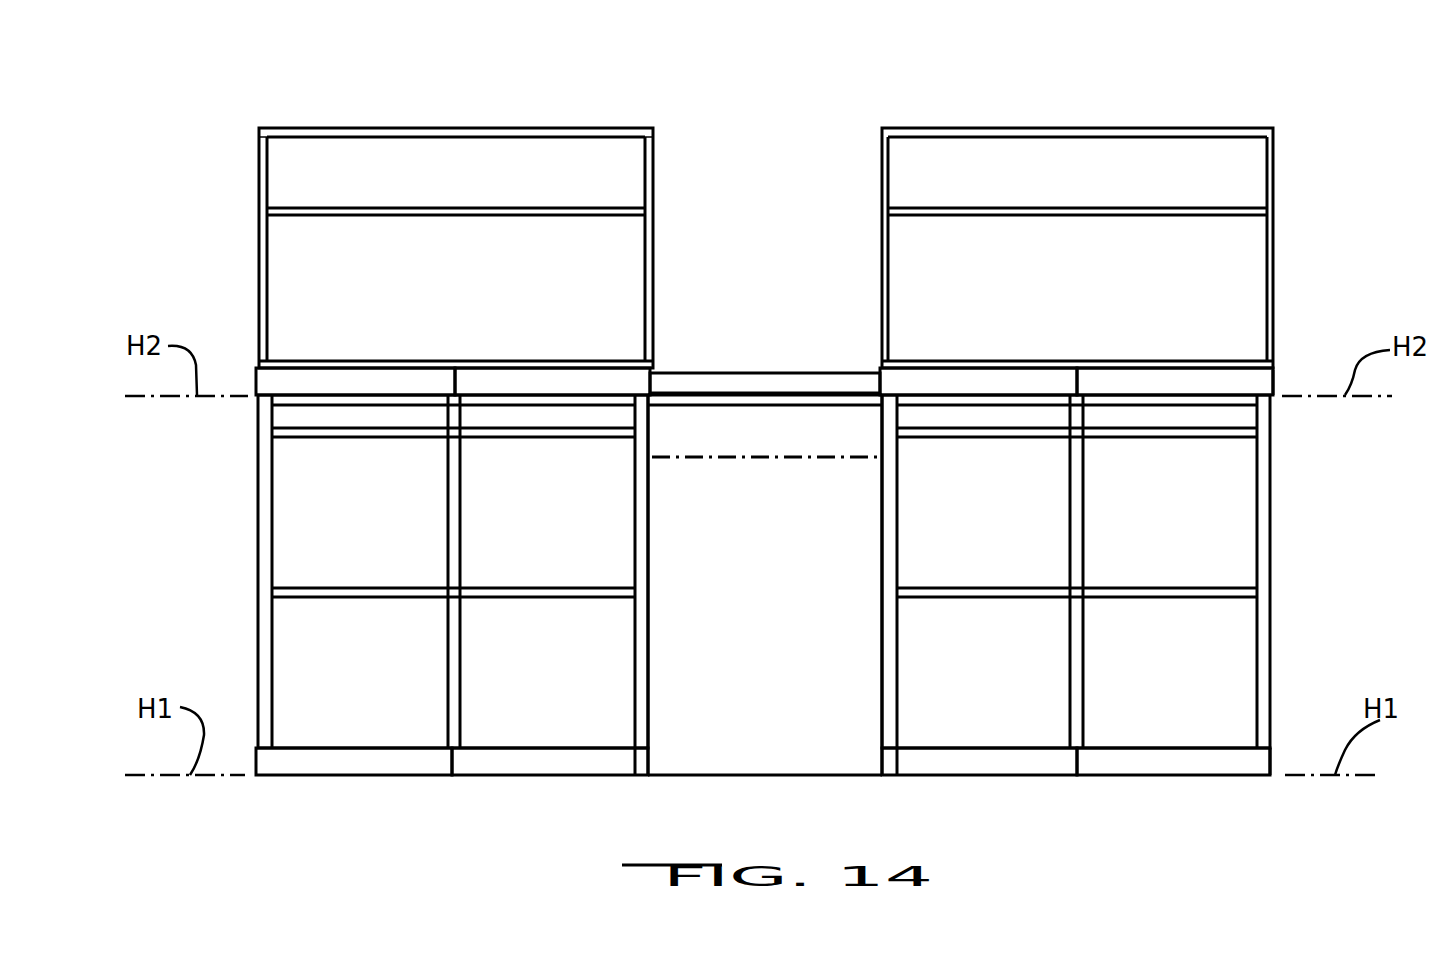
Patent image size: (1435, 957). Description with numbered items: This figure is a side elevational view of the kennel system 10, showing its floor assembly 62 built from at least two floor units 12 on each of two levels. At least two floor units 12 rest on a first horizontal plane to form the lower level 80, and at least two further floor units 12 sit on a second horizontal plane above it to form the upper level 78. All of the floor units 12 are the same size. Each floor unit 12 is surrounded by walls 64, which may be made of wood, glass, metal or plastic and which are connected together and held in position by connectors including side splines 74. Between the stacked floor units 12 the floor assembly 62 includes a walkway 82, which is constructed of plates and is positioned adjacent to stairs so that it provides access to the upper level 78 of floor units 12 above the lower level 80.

The kennel system 10 is at (1084, 110).
The floor unit 12 is at (258, 381).
The floor assembly 62 is at (1203, 110).
The wall 64 is at (280, 282).
The side spline 74 is at (462, 536).
The upper level 78 is at (1272, 378).
The lower level 80 is at (1272, 757).
The walkway 82 is at (746, 372).